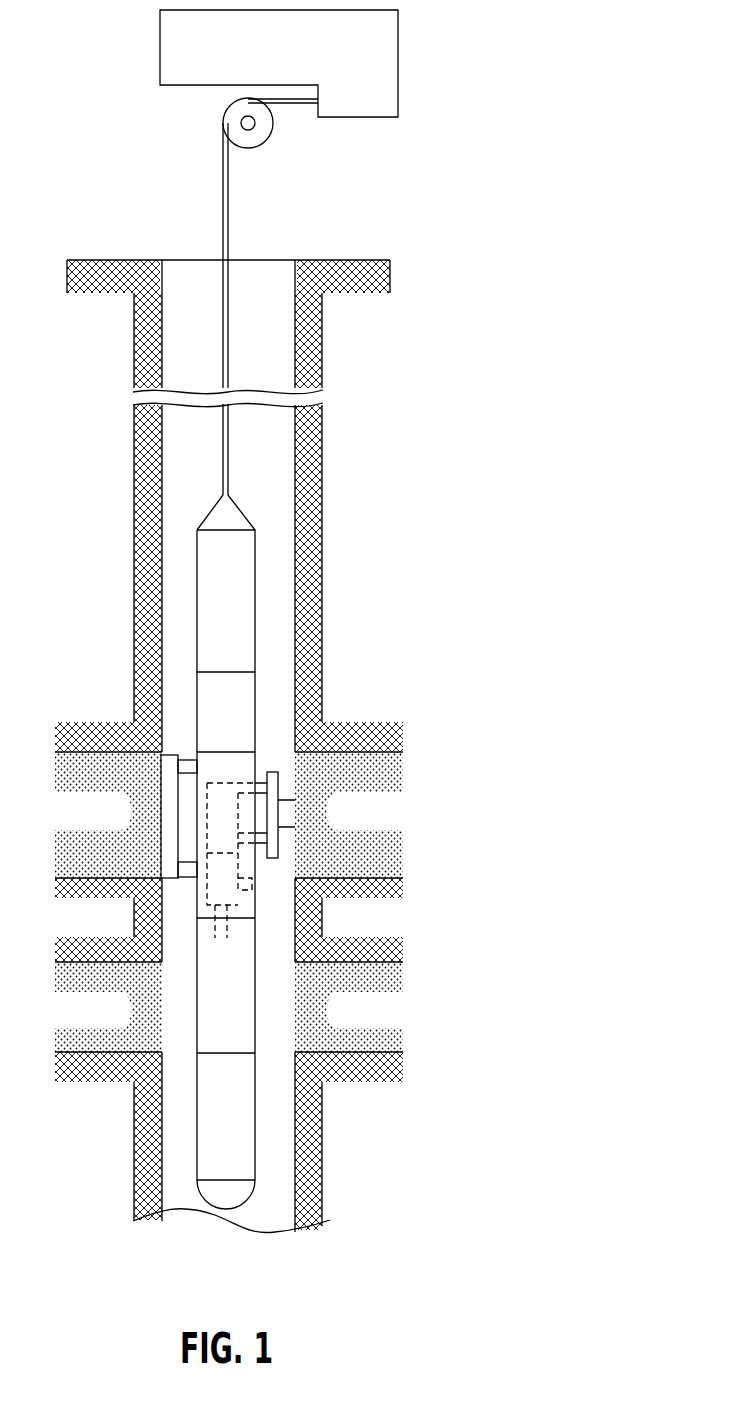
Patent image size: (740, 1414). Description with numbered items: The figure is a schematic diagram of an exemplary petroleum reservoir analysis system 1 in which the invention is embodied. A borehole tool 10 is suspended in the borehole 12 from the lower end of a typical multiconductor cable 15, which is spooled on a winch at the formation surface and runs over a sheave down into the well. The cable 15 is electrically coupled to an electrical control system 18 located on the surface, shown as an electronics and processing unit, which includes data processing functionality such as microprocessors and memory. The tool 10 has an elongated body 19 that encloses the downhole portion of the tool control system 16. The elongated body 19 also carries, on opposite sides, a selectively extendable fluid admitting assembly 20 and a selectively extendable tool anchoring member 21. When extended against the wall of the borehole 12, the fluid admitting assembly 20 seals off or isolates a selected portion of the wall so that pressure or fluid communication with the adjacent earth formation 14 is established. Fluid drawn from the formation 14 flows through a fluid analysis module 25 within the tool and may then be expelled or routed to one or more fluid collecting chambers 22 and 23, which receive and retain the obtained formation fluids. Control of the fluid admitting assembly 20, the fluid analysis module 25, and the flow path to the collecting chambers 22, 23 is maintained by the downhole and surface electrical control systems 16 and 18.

The petroleum reservoir analysis system 1 is at (498, 42).
The electrical control system 18 is at (390, 116).
The multiconductor cable 15 is at (222, 190).
The borehole 12 is at (291, 328).
The earth formation 14 is at (368, 826).
The borehole tool 10 is at (264, 652).
The elongated body 19 is at (232, 592).
The tool control system 16 is at (241, 725).
The fluid admitting assembly 20 is at (275, 785).
The tool anchoring member 21 is at (172, 820).
The fluid analysis module 25 is at (242, 885).
The fluid collecting chamber 22 is at (241, 998).
The fluid collecting chamber 23 is at (241, 1130).